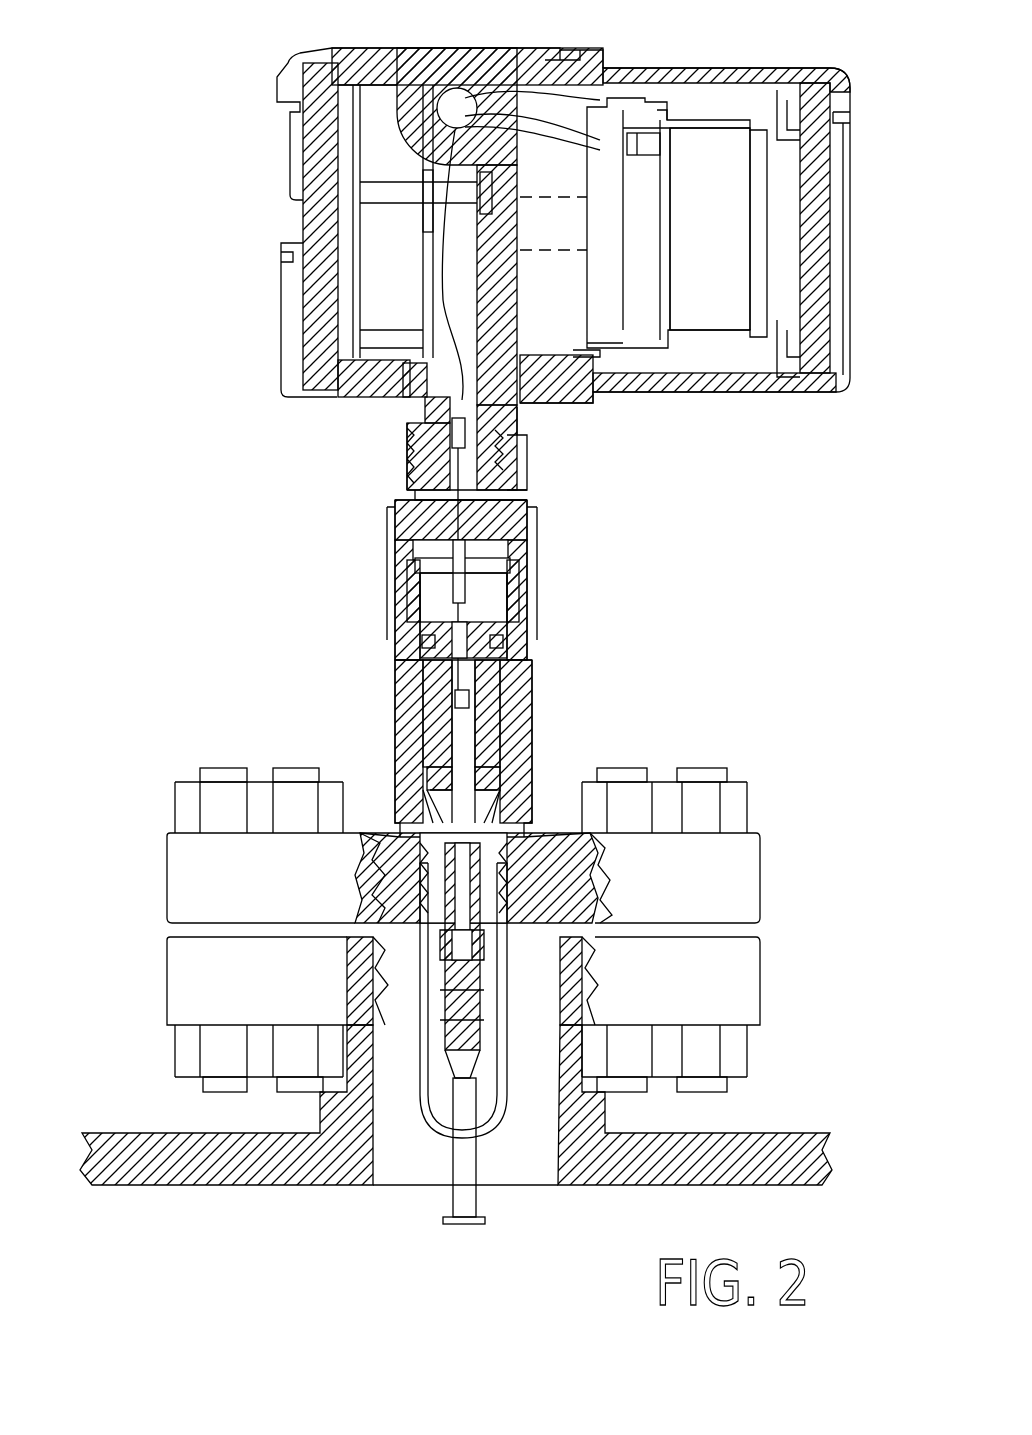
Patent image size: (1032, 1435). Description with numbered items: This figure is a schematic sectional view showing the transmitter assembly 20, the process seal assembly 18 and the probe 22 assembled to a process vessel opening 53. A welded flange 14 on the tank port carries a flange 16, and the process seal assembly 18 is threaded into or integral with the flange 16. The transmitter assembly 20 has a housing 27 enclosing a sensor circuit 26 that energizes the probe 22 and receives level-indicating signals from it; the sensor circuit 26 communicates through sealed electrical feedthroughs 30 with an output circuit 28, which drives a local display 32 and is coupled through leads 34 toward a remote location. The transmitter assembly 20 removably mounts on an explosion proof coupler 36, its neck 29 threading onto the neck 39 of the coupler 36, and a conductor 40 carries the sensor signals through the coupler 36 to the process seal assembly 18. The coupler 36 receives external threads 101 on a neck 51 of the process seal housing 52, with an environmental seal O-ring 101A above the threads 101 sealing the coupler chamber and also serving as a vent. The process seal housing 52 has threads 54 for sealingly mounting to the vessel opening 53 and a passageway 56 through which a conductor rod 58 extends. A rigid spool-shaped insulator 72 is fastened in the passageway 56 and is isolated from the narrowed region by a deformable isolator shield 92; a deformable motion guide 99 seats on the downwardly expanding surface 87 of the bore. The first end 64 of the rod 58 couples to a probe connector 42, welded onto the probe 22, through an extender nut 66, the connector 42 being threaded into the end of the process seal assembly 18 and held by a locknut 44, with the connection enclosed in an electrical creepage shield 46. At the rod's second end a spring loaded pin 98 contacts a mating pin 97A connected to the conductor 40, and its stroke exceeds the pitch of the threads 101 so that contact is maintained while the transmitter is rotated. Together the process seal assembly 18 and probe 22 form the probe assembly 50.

The welded flange 14 is at (760, 962).
The flange 16 is at (760, 868).
The process seal assembly 18 is at (532, 710).
The transmitter assembly 20 is at (656, 422).
The probe 22 is at (455, 1165).
The sensor circuit 26 is at (403, 281).
The housing 27 is at (428, 70).
The output circuit 28 is at (616, 231).
The neck 29 is at (452, 422).
The sealed electrical feedthroughs 30 is at (455, 208).
The local display 32 is at (755, 190).
The leads 34 is at (545, 135).
The explosion proof coupler 36 is at (520, 462).
The neck of coupler 39 is at (440, 440).
The conductor 40 is at (432, 466).
The probe connector 42 is at (432, 1062).
The locknut 44 is at (450, 1020).
The electrical creepage shield 46 is at (494, 1120).
The probe assembly 50 is at (384, 750).
The neck of process seal housing 51 is at (522, 602).
The process seal housing 52 is at (527, 665).
The process vessel opening 53 is at (398, 1190).
The threads 54 is at (547, 836).
The passageway 56 is at (440, 800).
The conductor rod 58 is at (470, 785).
The first end 64 is at (468, 948).
The extender nut 66 is at (478, 965).
The spool-shaped insulator 72 is at (500, 702).
The downwardly expanding surface 87 is at (362, 883).
The isolator shield 92 is at (400, 690).
The pin 97A is at (478, 580).
The spring loaded pin 98 is at (527, 642).
The deformable motion guide 99 is at (520, 850).
The external threads 101 is at (415, 600).
The environmental seal O-ring 101A is at (420, 585).